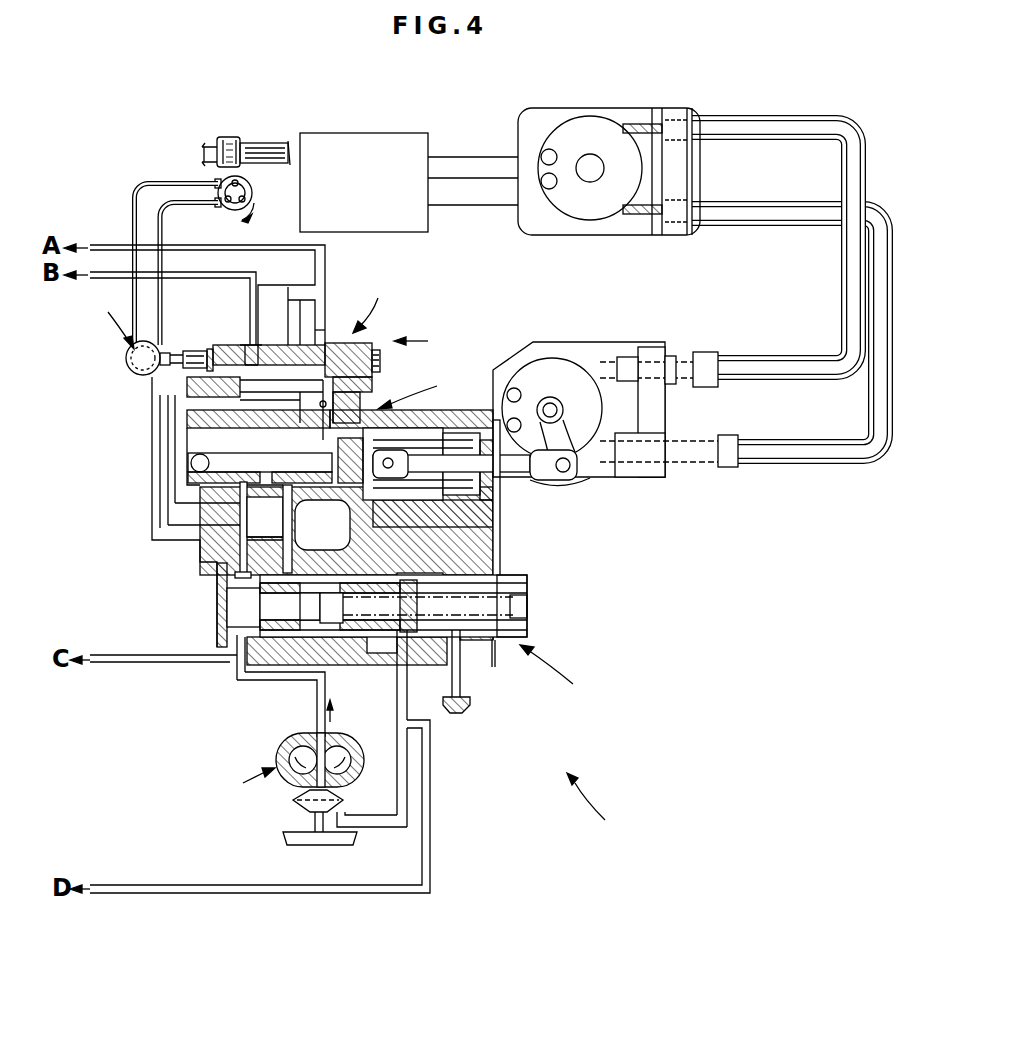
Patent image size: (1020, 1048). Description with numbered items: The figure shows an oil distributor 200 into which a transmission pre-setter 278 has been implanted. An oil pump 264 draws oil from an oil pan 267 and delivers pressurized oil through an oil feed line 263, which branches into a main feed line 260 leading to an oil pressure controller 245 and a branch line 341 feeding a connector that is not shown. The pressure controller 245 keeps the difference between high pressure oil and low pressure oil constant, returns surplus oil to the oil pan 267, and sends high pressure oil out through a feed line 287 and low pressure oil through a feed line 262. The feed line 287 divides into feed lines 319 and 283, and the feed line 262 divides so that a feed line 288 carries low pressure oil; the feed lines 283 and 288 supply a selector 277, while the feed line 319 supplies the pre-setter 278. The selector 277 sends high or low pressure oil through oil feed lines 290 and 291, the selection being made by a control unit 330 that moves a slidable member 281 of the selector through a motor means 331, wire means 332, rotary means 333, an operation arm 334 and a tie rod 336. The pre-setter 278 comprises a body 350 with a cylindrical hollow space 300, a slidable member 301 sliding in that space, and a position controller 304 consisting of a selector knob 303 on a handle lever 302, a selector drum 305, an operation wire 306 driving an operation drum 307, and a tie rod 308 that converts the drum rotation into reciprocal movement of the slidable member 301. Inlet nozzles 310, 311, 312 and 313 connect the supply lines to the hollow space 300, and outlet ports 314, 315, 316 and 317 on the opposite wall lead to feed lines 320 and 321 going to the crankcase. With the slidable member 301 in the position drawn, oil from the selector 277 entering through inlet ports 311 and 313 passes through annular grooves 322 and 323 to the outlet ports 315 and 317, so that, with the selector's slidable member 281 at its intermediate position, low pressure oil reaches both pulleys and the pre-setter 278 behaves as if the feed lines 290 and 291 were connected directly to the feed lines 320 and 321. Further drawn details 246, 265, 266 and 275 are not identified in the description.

The oil distributor 200 is at (610, 808).
The oil pressure controller 245 is at (440, 637).
The valve port 246 is at (380, 645).
The main feed line 260 is at (236, 655).
The feed line 262 is at (357, 570).
The oil feed line 263 is at (270, 683).
The oil pump 264 is at (280, 772).
The drain passage 265 is at (402, 660).
The return pipe 266 is at (397, 723).
The oil pan 267 is at (340, 840).
The stem 275 is at (450, 650).
The selector 277 is at (451, 425).
The transmission pre-setter 278 is at (389, 304).
The slidable member 281 is at (410, 426).
The feed line 283 is at (237, 503).
The feed line 287 is at (237, 527).
The feed line 288 is at (283, 535).
The oil feed line 290 is at (292, 512).
The oil feed line 291 is at (326, 405).
The cylindrical hollow space 300 is at (200, 340).
The slidable member 301 is at (368, 345).
The handle lever 302 is at (265, 143).
The selector knob 303 is at (230, 138).
The position controller 304 is at (100, 318).
The selector drum 305 is at (232, 214).
The operation wire 306 is at (135, 187).
The operation drum 307 is at (126, 358).
The tie rod 308 is at (158, 360).
The inlet nozzle 310 is at (262, 392).
The inlet nozzle 311 is at (285, 400).
The inlet nozzle 312 is at (260, 452).
The inlet nozzle 313 is at (372, 386).
The outlet port 314 is at (236, 343).
The outlet port 315 is at (295, 300).
The outlet port 316 is at (305, 318).
The outlet port 317 is at (322, 340).
The feed line 319 is at (160, 480).
The feed line 320 is at (222, 262).
The feed line 321 is at (286, 268).
The annular groove 322 is at (243, 385).
The annular groove 323 is at (378, 360).
The control unit 330 is at (400, 133).
The motor means 331 is at (592, 120).
The wire means 332 is at (757, 200).
The rotary means 333 is at (556, 356).
The operation arm 334 is at (580, 470).
The tie rod 336 is at (497, 480).
The branch line 341 is at (150, 662).
The body 350 is at (437, 346).